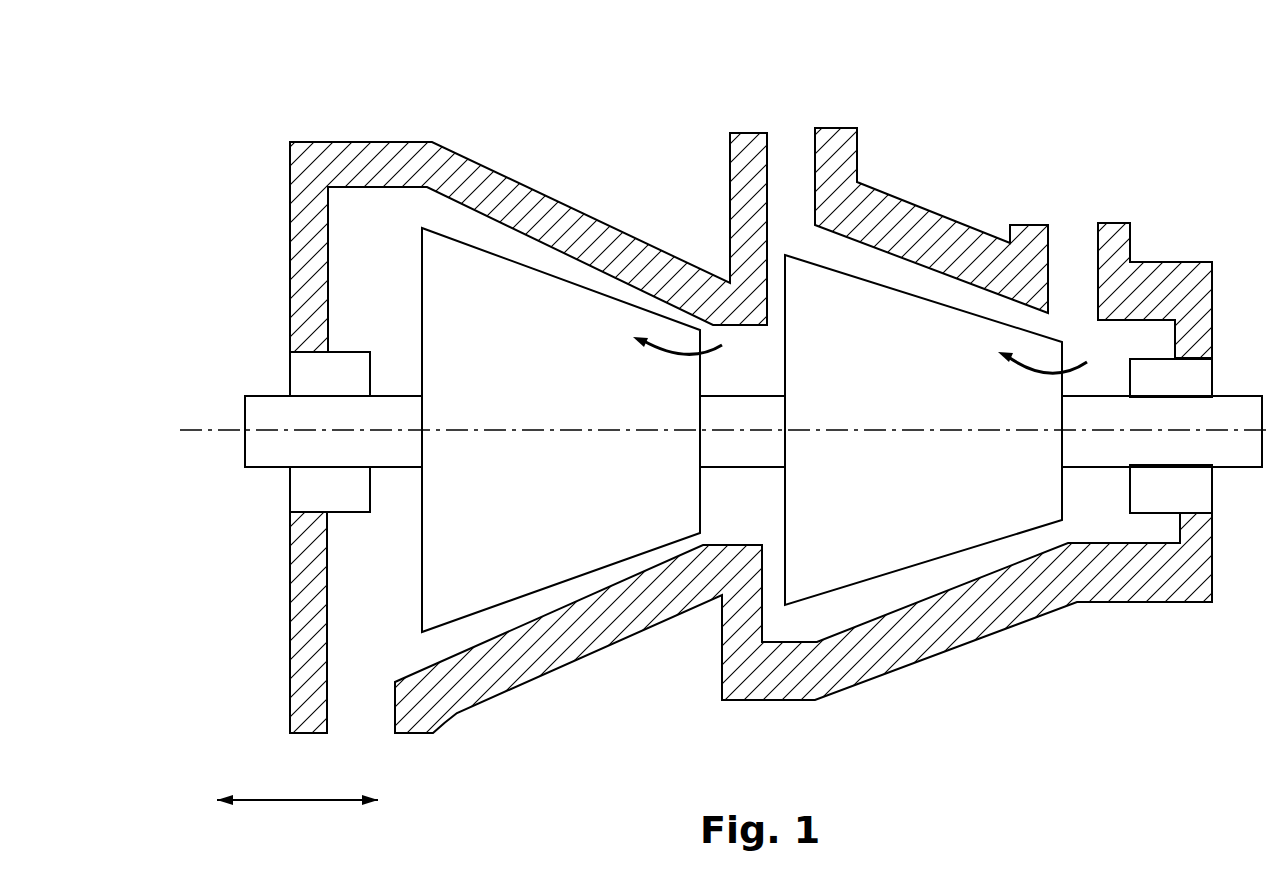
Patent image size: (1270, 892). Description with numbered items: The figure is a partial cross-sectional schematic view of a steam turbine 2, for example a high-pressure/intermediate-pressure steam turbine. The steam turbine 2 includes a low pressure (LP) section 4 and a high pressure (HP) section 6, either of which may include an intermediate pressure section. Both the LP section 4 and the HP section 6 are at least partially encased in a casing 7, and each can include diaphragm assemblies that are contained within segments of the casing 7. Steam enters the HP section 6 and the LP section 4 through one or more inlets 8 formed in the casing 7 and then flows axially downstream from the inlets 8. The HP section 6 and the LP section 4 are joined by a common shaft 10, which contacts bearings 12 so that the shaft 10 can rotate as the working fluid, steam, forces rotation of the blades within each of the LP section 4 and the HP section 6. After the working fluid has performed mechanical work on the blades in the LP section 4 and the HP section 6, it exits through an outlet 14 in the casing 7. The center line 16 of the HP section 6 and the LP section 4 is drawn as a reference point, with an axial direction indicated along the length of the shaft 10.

The steam turbine 2 is at (721, 436).
The low pressure (LP) section 4 is at (561, 399).
The high pressure (HP) section 6 is at (918, 399).
The casing 7 is at (522, 182).
The inlets 8 is at (779, 121).
The common shaft 10 is at (398, 408).
The bearings 12 is at (317, 390).
The outlet 14 is at (376, 745).
The center line (CL) 16 is at (721, 401).